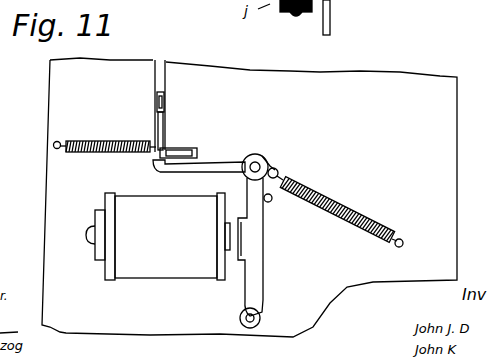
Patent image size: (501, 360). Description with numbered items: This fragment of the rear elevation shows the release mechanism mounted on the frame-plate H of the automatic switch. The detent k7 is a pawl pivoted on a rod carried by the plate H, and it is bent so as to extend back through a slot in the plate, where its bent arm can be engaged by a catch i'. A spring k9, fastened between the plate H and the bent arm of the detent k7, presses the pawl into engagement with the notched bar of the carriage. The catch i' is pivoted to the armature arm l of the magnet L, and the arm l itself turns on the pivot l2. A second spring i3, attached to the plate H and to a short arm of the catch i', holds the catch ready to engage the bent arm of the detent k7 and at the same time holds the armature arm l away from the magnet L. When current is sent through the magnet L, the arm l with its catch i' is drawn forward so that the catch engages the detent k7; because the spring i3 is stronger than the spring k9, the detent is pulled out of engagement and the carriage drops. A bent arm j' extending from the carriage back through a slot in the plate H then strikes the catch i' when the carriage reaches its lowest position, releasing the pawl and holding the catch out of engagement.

The frame-plate H is at (249, 197).
The bent arm j' is at (175, 118).
The spring k9 is at (88, 144).
The detent k7 is at (185, 150).
The catch i' is at (215, 167).
The spring i3 is at (337, 203).
The armature arm l is at (253, 236).
The pivot l2 is at (257, 318).
The magnet L is at (158, 236).